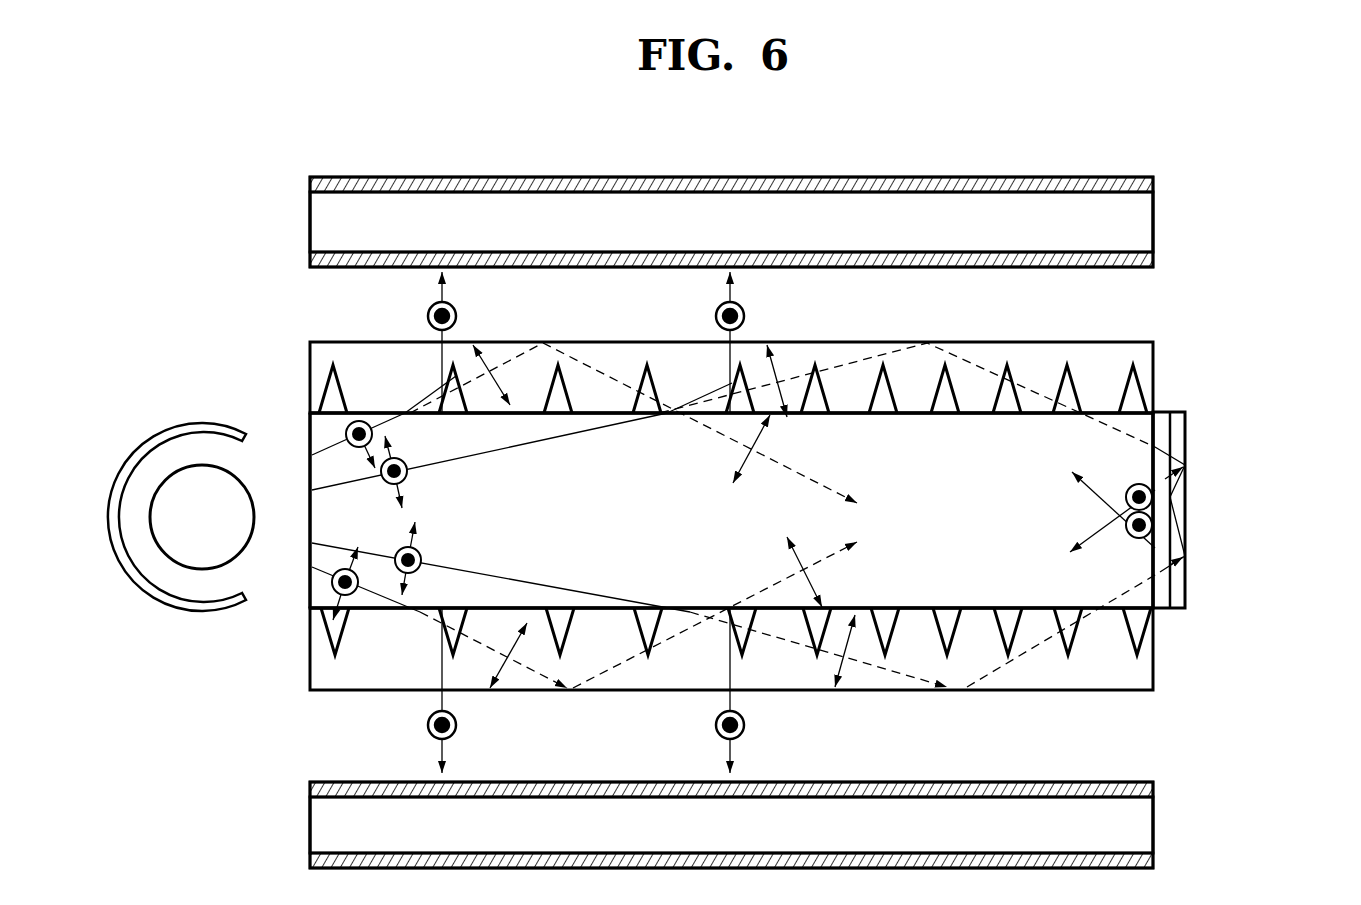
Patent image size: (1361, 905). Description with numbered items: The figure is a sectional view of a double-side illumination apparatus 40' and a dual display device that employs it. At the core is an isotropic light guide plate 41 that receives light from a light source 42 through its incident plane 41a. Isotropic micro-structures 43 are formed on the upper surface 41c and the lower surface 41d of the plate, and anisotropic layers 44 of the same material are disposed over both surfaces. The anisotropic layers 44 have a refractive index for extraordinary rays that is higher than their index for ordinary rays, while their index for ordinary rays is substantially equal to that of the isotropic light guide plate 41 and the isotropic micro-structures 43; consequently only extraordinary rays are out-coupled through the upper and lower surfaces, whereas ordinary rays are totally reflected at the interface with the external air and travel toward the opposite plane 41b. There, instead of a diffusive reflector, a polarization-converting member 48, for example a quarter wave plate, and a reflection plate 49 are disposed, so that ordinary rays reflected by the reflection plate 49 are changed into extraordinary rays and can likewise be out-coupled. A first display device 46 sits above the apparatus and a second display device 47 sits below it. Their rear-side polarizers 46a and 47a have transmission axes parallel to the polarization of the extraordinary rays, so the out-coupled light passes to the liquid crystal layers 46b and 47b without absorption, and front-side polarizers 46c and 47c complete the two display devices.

The double-side illumination apparatus 40' is at (804, 533).
The isotropic light guide plate 41 is at (792, 508).
The incident plane 41a is at (312, 515).
The opposite plane 41b is at (1150, 455).
The upper surface 41c is at (855, 415).
The lower surface 41d is at (952, 603).
The light source 42 is at (163, 533).
The isotropic micro-structures 43 is at (1137, 397).
The anisotropic layers 44 is at (1133, 352).
The first display device 46 is at (822, 217).
The rear-side polarizer 46a is at (787, 259).
The liquid crystal layer 46b is at (1155, 224).
The front-side polarizer 46c is at (1155, 180).
The second display device 47 is at (822, 820).
The rear-side polarizer 47a is at (1155, 788).
The liquid crystal layer 47b is at (1152, 828).
The front-side polarizer 47c is at (788, 861).
The polarization-converting member 48 is at (1167, 497).
The reflection plate 49 is at (1182, 530).